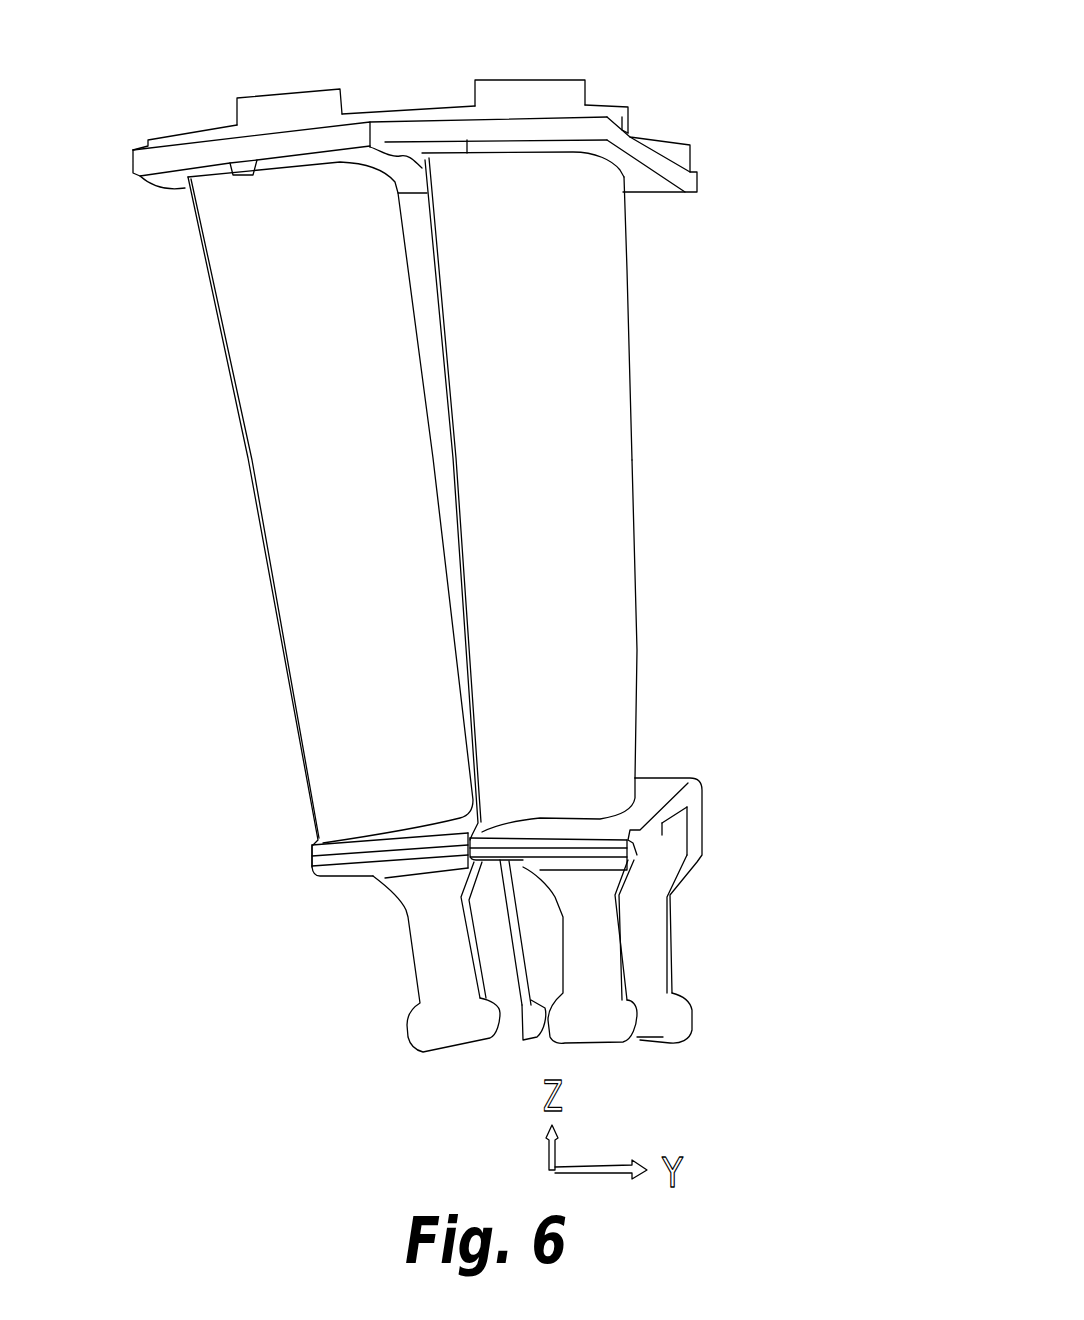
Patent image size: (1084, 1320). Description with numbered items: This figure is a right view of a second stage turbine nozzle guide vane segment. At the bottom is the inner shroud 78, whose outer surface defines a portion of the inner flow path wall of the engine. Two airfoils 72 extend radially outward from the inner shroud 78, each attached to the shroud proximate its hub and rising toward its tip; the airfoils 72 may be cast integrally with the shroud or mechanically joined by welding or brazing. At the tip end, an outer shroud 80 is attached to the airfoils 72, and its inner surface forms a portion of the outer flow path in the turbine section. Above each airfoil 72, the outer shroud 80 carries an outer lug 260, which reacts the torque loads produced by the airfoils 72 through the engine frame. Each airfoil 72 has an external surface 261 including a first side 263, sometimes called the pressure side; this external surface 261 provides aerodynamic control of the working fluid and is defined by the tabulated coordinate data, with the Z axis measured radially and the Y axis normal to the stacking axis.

The airfoil 72 is at (365, 447).
The inner shroud 78 is at (702, 802).
The outer shroud 80 is at (683, 180).
The outer lug 260 is at (282, 102).
The external surface 261 is at (588, 607).
The first side 263 is at (597, 328).